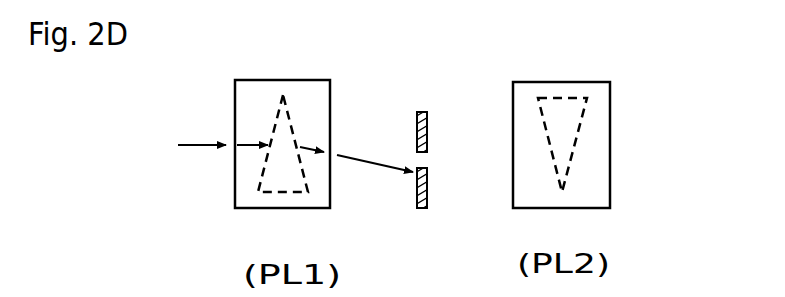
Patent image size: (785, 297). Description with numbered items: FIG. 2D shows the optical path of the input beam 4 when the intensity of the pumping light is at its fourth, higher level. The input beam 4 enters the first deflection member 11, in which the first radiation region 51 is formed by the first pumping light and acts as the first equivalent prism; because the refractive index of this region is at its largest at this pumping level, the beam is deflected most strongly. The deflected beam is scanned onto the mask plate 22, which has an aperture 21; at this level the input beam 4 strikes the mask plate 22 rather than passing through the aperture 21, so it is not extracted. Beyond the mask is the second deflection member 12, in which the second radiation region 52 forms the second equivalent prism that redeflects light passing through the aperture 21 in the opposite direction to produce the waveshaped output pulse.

The input beam ④ 4 is at (145, 148).
The first deflection member 11 is at (313, 80).
The first radiation region 51 is at (283, 196).
The mask plate 22 is at (428, 120).
The aperture 21 is at (427, 160).
The second deflection member 12 is at (600, 82).
The second radiation region 52 is at (553, 95).